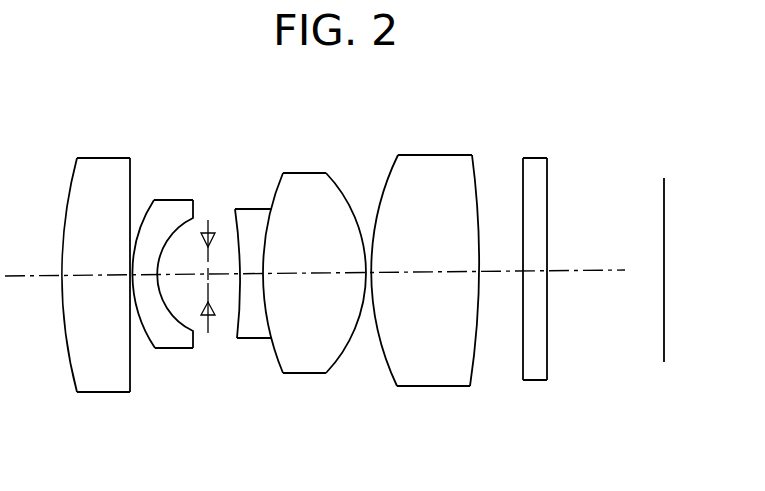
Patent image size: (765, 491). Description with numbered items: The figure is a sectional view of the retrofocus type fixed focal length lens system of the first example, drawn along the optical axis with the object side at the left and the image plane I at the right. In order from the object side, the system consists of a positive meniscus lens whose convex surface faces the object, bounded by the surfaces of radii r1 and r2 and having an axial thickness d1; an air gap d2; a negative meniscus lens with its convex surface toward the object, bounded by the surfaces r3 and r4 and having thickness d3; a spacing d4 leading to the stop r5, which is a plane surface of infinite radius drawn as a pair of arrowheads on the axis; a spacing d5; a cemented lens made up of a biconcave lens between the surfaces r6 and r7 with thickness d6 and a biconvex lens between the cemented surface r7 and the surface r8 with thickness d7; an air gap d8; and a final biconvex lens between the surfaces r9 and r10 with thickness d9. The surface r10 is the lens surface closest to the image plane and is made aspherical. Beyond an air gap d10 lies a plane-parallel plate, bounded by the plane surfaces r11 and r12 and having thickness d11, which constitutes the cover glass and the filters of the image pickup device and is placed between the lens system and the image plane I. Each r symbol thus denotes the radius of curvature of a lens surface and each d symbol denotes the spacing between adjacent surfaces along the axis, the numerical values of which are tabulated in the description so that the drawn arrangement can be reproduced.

The radius of curvature of first lens surface r1 is at (68, 186).
The radius of curvature of second lens surface r2 is at (133, 188).
The radius of curvature of third lens surface r3 is at (143, 220).
The radius of curvature of fourth lens surface r4 is at (174, 234).
The stop r5 is at (200, 262).
The radius of curvature of sixth lens surface r6 is at (238, 245).
The radius of curvature of seventh lens surface r7 is at (265, 225).
The radius of curvature of eighth lens surface r8 is at (342, 192).
The radius of curvature of ninth lens surface r9 is at (388, 178).
The radius of curvature of tenth lens surface r10 is at (472, 175).
The radius of curvature of eleventh surface r11 is at (522, 174).
The radius of curvature of twelfth surface r12 is at (548, 174).
The spacing between first and second lens surfaces d1 is at (95, 276).
The spacing between second and third lens surfaces d2 is at (135, 282).
The spacing between third and fourth lens surfaces d3 is at (148, 287).
The spacing between fourth lens surface and stop d4 is at (200, 283).
The spacing between stop and sixth lens surface d5 is at (223, 283).
The spacing between sixth and seventh lens surfaces d6 is at (252, 278).
The spacing between seventh and eighth lens surfaces d7 is at (317, 272).
The spacing between eighth and ninth lens surfaces d8 is at (362, 280).
The spacing between ninth and tenth lens surfaces d9 is at (425, 272).
The spacing between tenth and eleventh surfaces d10 is at (497, 270).
The spacing between eleventh and twelfth surfaces d11 is at (535, 270).
The image plane I is at (665, 217).